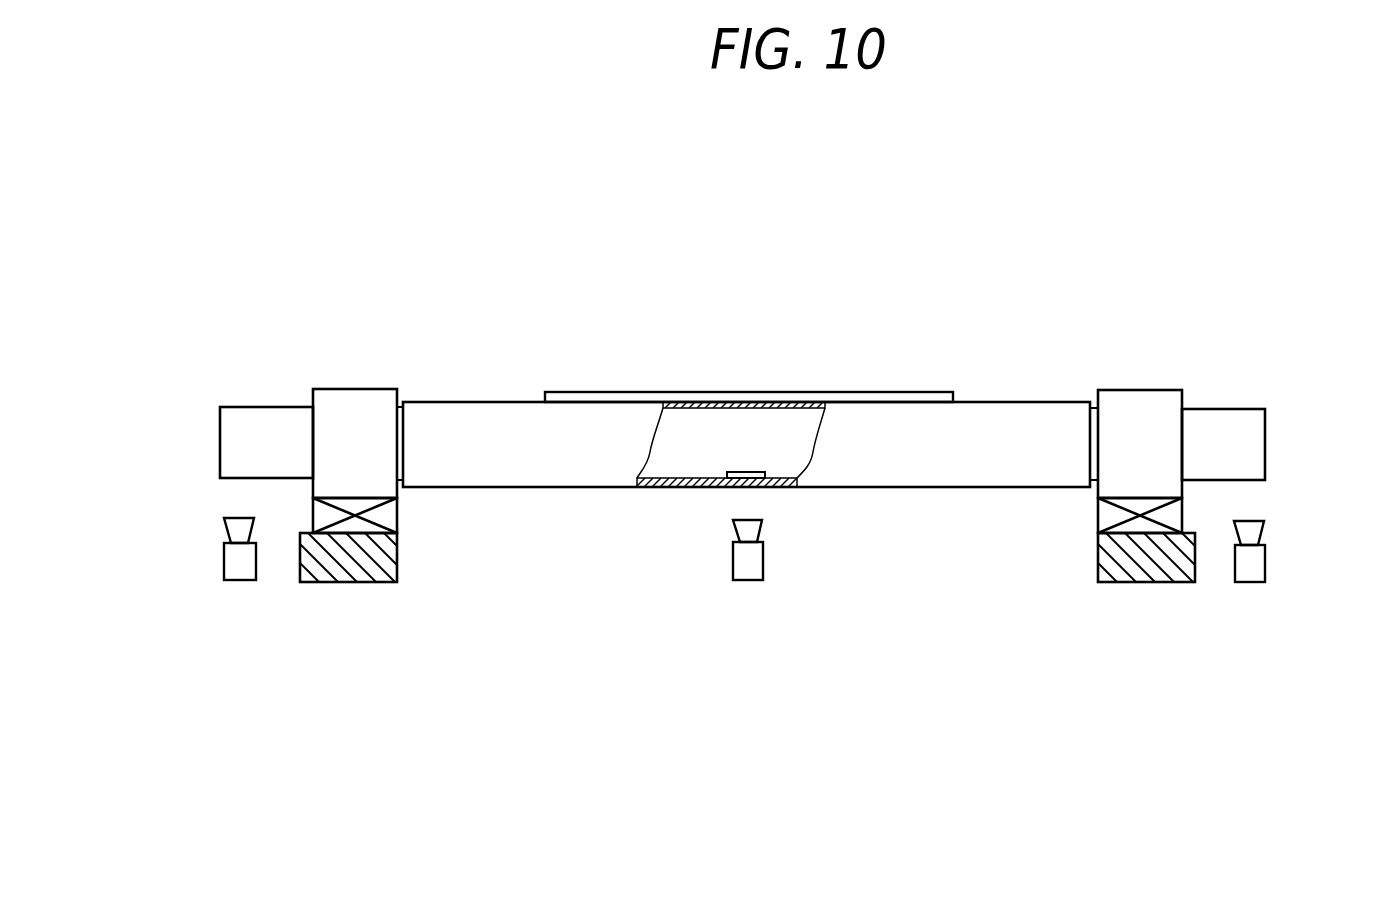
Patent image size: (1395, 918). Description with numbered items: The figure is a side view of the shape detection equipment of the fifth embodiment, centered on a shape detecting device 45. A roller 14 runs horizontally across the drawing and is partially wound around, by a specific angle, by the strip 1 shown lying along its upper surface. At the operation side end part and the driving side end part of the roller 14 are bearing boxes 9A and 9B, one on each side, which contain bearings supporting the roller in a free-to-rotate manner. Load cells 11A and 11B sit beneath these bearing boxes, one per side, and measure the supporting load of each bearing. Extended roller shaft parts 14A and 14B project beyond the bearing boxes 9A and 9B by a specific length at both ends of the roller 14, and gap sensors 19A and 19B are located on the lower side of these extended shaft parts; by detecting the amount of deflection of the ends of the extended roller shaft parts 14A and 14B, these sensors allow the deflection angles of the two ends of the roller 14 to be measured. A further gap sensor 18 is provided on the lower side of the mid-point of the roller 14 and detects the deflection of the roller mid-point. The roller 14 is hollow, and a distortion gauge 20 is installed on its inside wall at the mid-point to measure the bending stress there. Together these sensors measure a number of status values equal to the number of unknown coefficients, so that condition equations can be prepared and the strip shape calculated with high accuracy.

The shape detecting device 45 is at (937, 211).
The strip 1 is at (860, 392).
The roller 14 is at (877, 490).
The distortion gauge 20 is at (740, 470).
The bearing box 9A is at (1142, 390).
The bearing box 9B is at (357, 389).
The load cell 11A is at (1097, 522).
The load cell 11B is at (398, 516).
The extended roller shaft part 14A is at (1218, 428).
The extended roller shaft part 14B is at (265, 430).
The gap sensor 18 is at (748, 585).
The gap sensor 19A is at (1266, 560).
The gap sensor 19B is at (224, 557).